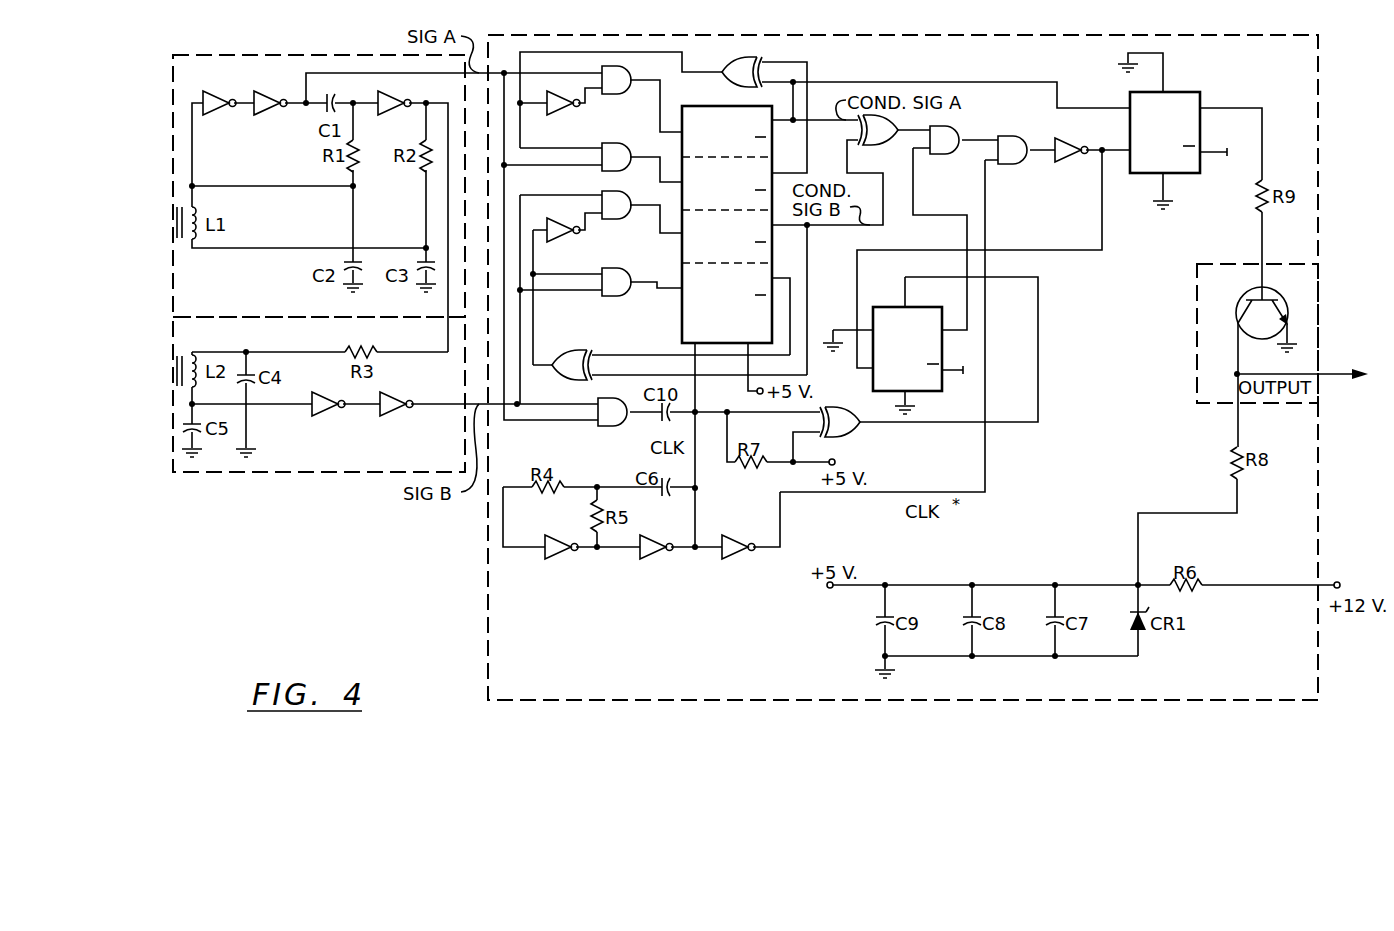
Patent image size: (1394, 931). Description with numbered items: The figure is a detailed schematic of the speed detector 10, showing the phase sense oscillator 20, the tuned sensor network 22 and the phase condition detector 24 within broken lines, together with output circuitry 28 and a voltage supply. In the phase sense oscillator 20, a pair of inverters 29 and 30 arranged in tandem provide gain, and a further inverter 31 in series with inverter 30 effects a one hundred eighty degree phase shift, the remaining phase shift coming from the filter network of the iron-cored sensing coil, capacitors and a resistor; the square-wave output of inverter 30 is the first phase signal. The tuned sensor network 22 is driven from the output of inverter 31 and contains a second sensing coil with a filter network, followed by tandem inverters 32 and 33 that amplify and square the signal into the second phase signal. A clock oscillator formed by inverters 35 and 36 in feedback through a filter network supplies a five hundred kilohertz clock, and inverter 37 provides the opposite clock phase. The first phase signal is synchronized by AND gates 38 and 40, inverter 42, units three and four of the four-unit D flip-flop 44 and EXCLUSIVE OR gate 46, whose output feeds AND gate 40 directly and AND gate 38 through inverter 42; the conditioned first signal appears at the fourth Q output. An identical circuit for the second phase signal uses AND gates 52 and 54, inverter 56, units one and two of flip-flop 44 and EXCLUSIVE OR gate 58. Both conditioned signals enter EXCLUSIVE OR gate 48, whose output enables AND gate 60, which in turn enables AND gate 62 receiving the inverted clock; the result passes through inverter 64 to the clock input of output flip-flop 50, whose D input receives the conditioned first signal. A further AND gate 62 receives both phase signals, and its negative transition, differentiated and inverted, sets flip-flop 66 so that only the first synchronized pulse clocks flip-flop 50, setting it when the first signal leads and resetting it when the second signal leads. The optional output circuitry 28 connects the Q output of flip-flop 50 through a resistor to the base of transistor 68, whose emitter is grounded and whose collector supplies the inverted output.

The speed detector 10 is at (393, 556).
The phase sense oscillator 20 is at (283, 55).
The tuned sensor network 22 is at (294, 472).
The phase condition detector 24 is at (488, 613).
The output circuitry 28 is at (1197, 347).
The inverter 29 is at (207, 91).
The inverter 30 is at (259, 91).
The inverter 31 is at (391, 98).
The inverter 32 is at (323, 417).
The inverter 33 is at (403, 417).
The inverter 35 is at (557, 560).
The inverter 36 is at (654, 560).
The inverter 37 is at (736, 560).
The AND gate 38 is at (624, 68).
The AND gate 40 is at (625, 142).
The inverter 42 is at (561, 116).
The D flip-flop 44 is at (708, 106).
The EXCLUSIVE OR gate 46 is at (735, 62).
The EXCLUSIVE OR gate 48 is at (883, 150).
The D flip-flop 50 is at (1181, 92).
The AND gate 52 is at (615, 221).
The AND gate 54 is at (615, 297).
The inverter 56 is at (571, 243).
The EXCLUSIVE OR gate 58 is at (579, 349).
The AND gate 60 is at (955, 155).
The AND gate 62 is at (1022, 165).
The inverter 64 is at (1082, 163).
The D flip-flop 66 is at (918, 398).
The transistor 68 is at (1247, 292).